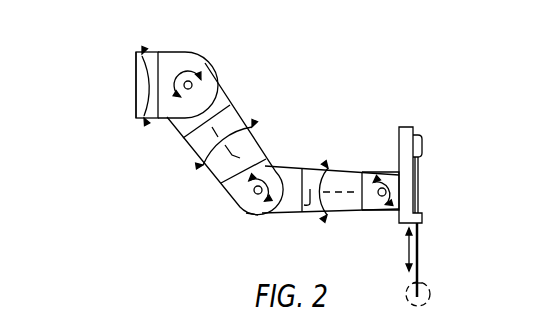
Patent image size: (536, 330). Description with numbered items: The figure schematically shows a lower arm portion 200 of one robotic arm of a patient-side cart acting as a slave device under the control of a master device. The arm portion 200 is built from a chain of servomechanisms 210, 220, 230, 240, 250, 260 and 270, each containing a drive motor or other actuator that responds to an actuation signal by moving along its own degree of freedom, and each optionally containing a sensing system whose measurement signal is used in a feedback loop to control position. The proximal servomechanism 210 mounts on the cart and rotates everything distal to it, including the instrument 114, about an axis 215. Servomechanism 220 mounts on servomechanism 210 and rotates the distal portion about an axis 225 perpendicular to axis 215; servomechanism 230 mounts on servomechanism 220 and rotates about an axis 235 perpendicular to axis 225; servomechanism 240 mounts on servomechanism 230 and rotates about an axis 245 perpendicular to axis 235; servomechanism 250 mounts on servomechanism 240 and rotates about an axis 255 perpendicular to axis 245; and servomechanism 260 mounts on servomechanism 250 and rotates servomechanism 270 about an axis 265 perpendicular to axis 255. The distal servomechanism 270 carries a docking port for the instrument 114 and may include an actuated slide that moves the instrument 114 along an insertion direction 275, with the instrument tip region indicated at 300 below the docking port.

The lower arm portion 200 is at (99, 232).
The servomechanism 210 is at (151, 122).
The axis 215 is at (130, 87).
The servomechanism 220 is at (204, 63).
The axis 225 is at (193, 89).
The servomechanism 230 is at (197, 153).
The axis 235 is at (258, 136).
The servomechanism 240 is at (232, 203).
The axis 245 is at (256, 197).
The servomechanism 250 is at (326, 163).
The axis 255 is at (308, 206).
The servomechanism 260 is at (377, 180).
The axis 265 is at (377, 209).
The servomechanism 270 is at (404, 126).
The instrument 114 is at (424, 141).
The insertion direction 275 is at (418, 250).
The tool tip 300 is at (431, 291).